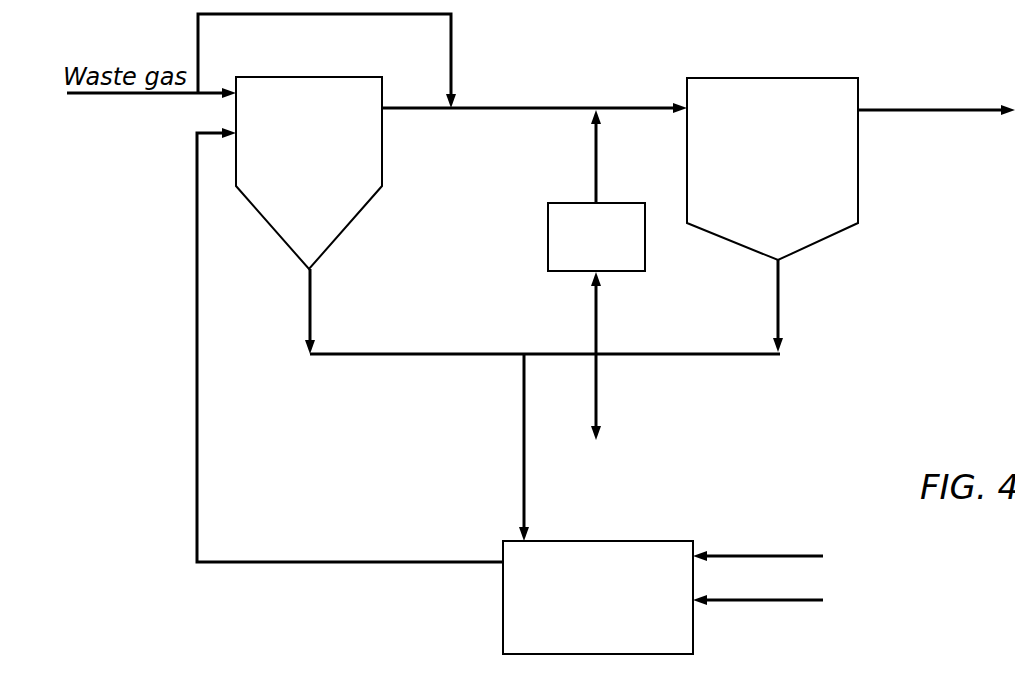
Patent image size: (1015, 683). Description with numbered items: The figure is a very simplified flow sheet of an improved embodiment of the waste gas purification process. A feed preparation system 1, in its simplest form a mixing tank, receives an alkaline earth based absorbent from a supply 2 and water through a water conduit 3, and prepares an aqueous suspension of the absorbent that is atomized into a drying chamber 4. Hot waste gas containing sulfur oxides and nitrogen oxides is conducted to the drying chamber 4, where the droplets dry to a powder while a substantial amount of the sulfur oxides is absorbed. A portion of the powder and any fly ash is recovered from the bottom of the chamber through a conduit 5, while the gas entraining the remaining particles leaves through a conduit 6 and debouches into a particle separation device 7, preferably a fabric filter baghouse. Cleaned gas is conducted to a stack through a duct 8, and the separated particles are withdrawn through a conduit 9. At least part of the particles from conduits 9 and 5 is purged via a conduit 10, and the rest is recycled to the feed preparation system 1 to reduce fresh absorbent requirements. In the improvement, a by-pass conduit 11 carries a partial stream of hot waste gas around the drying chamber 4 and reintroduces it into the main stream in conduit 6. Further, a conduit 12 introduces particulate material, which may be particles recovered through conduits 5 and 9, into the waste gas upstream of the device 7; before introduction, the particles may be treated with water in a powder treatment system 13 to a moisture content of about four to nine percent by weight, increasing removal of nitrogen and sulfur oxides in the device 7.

The feed preparation system 1 is at (633, 541).
The supply of alkaline earth based absorbent 2 is at (748, 600).
The water conduit 3 is at (758, 556).
The drying chamber 4 is at (364, 206).
The conduit 5 is at (312, 305).
The conduit 6 is at (503, 107).
The particle separation device 7 is at (858, 176).
The duct 8 is at (938, 108).
The conduit 9 is at (781, 302).
The conduit 10 is at (598, 395).
The by-pass conduit 11 is at (198, 52).
The conduit 12 is at (598, 158).
The powder treatment system 13 is at (645, 257).